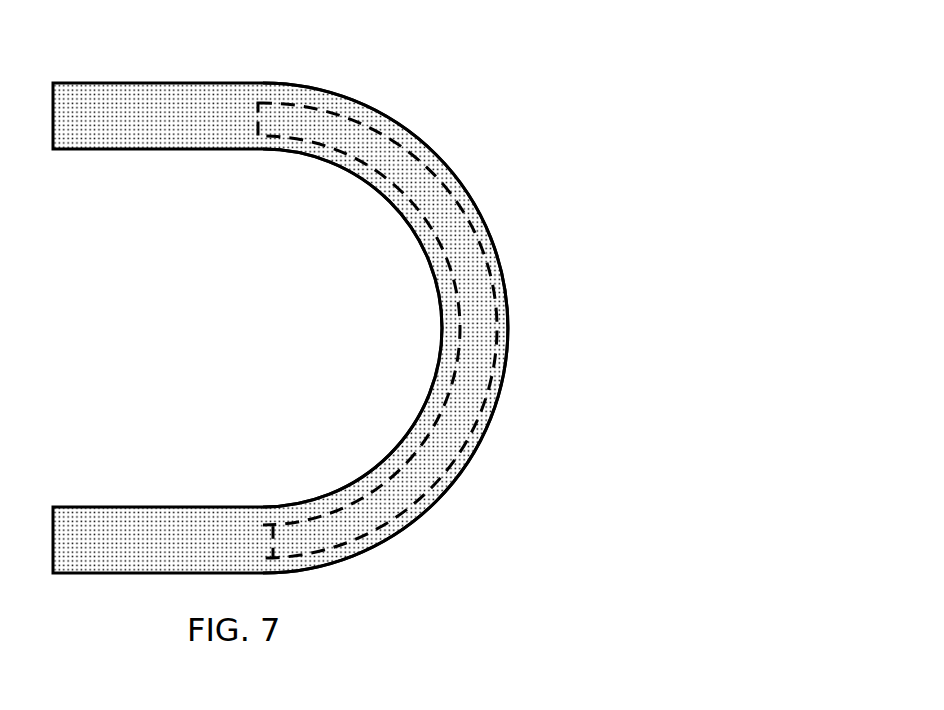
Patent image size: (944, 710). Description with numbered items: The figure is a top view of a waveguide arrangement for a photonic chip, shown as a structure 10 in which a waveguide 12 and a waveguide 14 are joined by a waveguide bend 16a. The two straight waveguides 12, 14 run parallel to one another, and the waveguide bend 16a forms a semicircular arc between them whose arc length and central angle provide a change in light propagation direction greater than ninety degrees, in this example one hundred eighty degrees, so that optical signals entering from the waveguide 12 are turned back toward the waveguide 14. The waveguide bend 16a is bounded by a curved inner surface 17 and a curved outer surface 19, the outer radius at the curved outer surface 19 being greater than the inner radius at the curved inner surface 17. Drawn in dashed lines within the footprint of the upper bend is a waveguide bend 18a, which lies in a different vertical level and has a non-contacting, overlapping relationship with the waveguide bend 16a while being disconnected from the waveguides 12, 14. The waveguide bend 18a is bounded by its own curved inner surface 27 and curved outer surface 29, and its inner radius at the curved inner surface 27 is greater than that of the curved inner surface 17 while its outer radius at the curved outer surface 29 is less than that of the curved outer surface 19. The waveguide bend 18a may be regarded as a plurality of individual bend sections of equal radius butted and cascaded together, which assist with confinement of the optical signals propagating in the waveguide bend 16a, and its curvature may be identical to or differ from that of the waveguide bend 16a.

The structure 10 is at (546, 122).
The waveguide 12 is at (88, 135).
The waveguide 14 is at (167, 535).
The waveguide bend 16a is at (477, 204).
The curved inner surface 17 is at (297, 152).
The waveguide bend 18a is at (492, 258).
The curved outer surface 19 is at (382, 110).
The curved inner surface 27 is at (442, 264).
The curved outer surface 29 is at (410, 152).